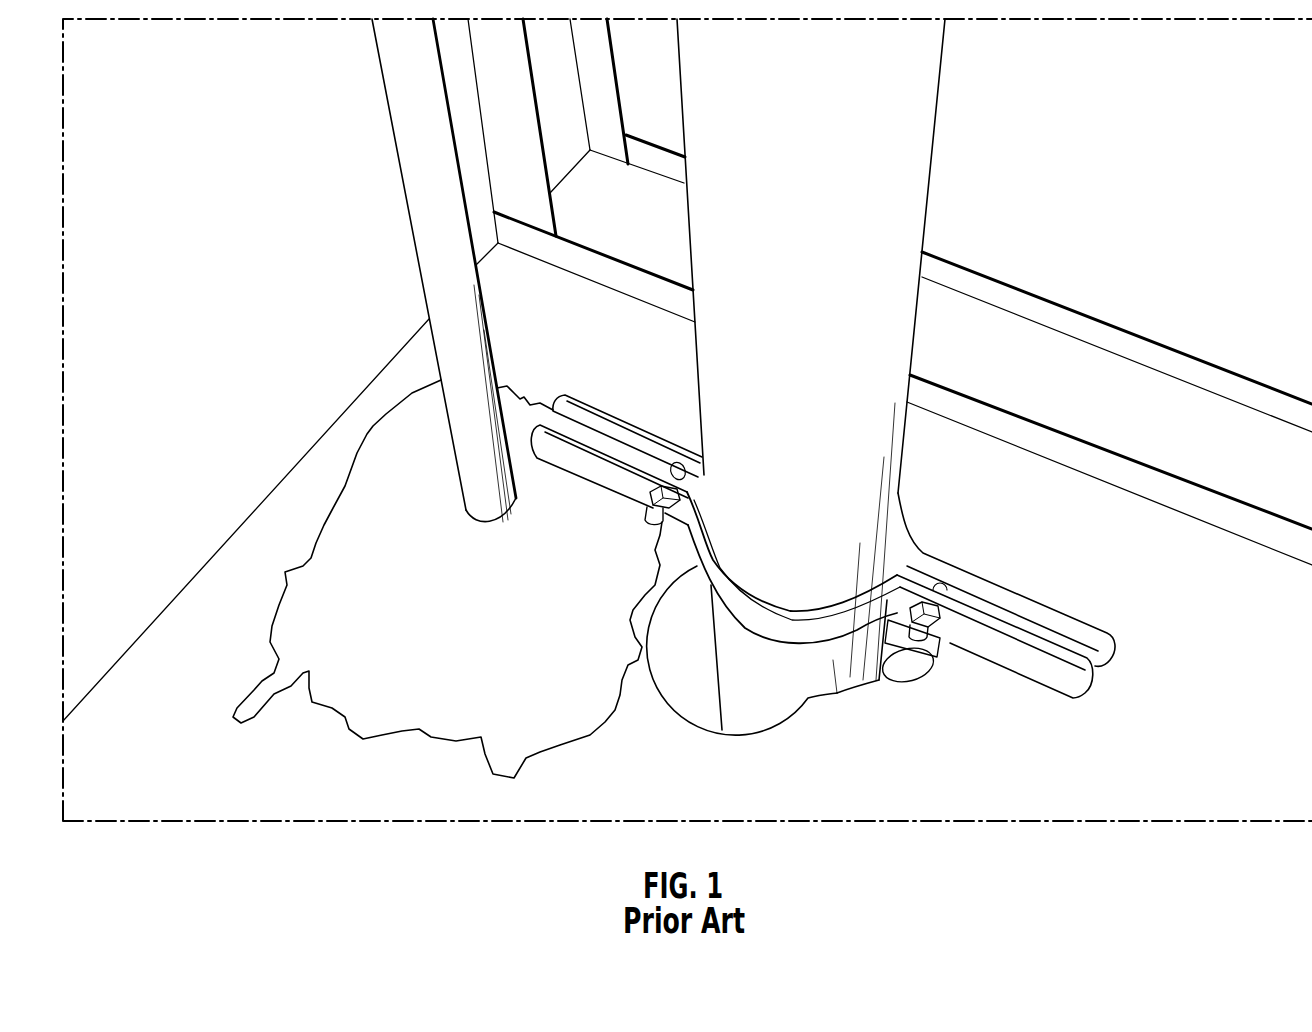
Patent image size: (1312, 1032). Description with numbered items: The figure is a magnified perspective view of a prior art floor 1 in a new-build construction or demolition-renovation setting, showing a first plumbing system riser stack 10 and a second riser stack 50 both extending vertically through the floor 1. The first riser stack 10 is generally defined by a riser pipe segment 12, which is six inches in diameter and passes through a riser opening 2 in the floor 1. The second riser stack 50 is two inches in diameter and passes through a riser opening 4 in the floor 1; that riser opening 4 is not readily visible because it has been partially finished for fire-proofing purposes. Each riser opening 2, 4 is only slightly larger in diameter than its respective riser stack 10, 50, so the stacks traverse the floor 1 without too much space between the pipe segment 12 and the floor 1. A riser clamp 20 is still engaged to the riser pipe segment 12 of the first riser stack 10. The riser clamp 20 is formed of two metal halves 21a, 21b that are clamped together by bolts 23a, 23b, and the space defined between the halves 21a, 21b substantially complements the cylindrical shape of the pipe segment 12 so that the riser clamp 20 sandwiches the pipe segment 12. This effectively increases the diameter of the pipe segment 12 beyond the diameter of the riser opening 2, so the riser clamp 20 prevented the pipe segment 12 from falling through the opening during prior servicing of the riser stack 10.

The floor 1 is at (1262, 793).
The riser opening 2 is at (698, 653).
The riser opening 4 is at (524, 506).
The first plumbing system riser stack 10 is at (943, 190).
The riser pipe segment 12 is at (815, 167).
The riser clamp 20 is at (932, 530).
The metal half 21a is at (1060, 678).
The metal half 21b is at (1087, 621).
The bolt 23a is at (941, 638).
The bolt 23b is at (642, 497).
The second riser stack 50 is at (400, 314).